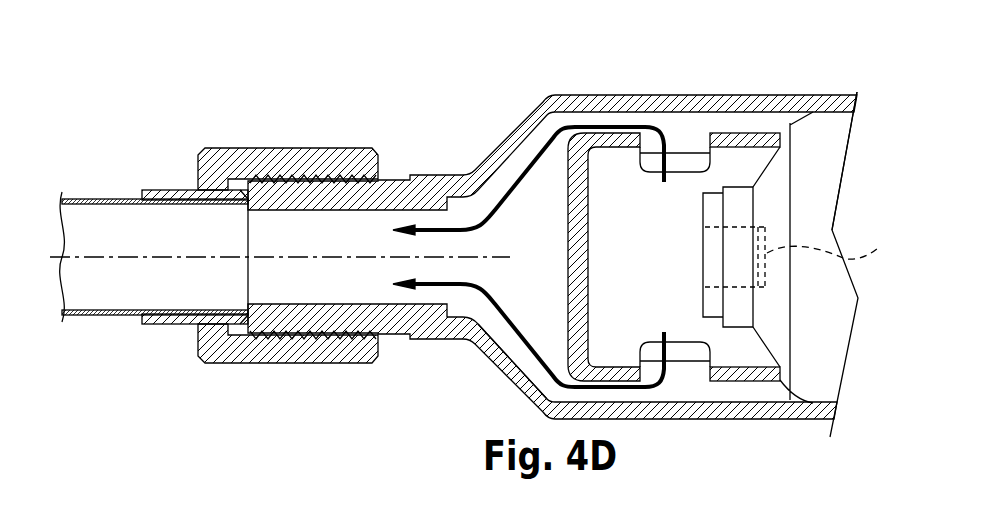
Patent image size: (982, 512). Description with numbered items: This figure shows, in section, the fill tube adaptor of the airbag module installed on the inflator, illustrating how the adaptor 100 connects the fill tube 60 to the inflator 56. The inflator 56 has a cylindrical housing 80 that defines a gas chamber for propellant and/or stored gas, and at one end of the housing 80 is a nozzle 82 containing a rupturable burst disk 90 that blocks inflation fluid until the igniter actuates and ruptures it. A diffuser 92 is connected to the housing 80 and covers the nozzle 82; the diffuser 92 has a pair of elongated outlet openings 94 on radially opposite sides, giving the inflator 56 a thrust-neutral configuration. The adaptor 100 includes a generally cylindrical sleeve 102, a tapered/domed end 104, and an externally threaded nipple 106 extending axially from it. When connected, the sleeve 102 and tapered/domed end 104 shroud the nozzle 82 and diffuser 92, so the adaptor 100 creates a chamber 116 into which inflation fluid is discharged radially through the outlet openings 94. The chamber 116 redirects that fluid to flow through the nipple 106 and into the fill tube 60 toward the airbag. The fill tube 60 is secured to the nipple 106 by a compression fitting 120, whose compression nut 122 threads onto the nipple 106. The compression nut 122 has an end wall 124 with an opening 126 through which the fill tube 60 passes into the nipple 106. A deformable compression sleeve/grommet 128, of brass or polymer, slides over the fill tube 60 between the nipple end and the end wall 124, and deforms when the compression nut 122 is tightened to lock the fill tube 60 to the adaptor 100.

The compression fitting 120 is at (185, 88).
The fill tube 60 is at (132, 228).
The opening 126 is at (198, 212).
The end wall 124 is at (200, 328).
The compression nut 122 is at (260, 157).
The compression sleeve/grommet 128 is at (248, 333).
The nipple 106 is at (362, 193).
The tapered/domed end 104 is at (493, 142).
The sleeve 102 is at (625, 102).
The chamber 116 is at (500, 320).
The diffuser 92 is at (577, 180).
The outlet openings 94 is at (685, 160).
The nozzle 82 is at (737, 200).
The adaptor 100 is at (787, 107).
The inflator 56 is at (810, 130).
The housing 80 is at (820, 170).
The burst disk 90 is at (837, 242).